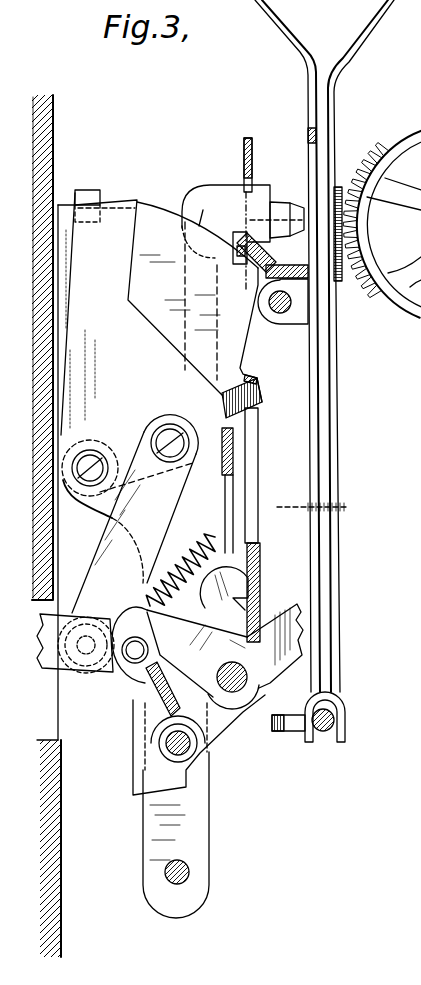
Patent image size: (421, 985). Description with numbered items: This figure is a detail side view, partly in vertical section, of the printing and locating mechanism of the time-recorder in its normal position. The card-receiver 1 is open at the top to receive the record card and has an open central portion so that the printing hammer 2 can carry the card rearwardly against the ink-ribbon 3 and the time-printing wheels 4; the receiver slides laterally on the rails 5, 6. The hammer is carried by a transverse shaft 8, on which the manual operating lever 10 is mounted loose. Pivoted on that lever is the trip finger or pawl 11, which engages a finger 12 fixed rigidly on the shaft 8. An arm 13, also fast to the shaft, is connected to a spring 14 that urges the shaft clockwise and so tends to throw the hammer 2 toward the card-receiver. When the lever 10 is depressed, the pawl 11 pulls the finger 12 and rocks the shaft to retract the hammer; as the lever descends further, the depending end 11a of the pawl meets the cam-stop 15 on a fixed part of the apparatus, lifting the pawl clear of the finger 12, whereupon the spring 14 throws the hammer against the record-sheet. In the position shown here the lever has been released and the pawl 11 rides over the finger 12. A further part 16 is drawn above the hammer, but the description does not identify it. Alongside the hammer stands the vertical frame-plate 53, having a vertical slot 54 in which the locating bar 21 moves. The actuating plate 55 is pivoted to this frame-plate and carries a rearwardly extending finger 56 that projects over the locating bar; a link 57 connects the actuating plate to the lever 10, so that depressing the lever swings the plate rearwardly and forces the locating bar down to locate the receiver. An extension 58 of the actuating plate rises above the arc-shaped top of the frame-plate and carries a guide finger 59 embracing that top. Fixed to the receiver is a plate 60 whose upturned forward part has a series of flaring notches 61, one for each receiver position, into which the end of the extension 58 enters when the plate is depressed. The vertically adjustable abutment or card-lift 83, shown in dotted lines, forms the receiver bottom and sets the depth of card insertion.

The card-receiver 1 is at (367, 36).
The printing hammer 2 is at (223, 196).
The ink-ribbon 3 is at (343, 287).
The time-printing devices or wheels 4 is at (347, 221).
The rail 5 is at (282, 314).
The rail 6 is at (322, 727).
The transverse shaft 8 is at (238, 683).
The manual operating lever 10 is at (108, 676).
The trip finger or pawl 11 is at (230, 572).
The depending end of the pawl 11a is at (200, 730).
The finger 12 is at (230, 625).
The arm 13 is at (196, 663).
The spring 14 is at (213, 536).
The cam-stop 15 is at (160, 745).
The rod 16 is at (247, 140).
The locating bar 21 is at (235, 462).
The vertical frame-plate 53 is at (153, 223).
The vertical slot 54 is at (230, 505).
The actuating plate 55 is at (147, 355).
The rearwardly extending finger 56 is at (250, 402).
The link 57 is at (107, 570).
The extension 58 is at (115, 263).
The guide finger 59 is at (92, 191).
The plate 60 is at (304, 274).
The flaring notches 61 is at (262, 272).
The abutment or card-lift 83 is at (283, 530).